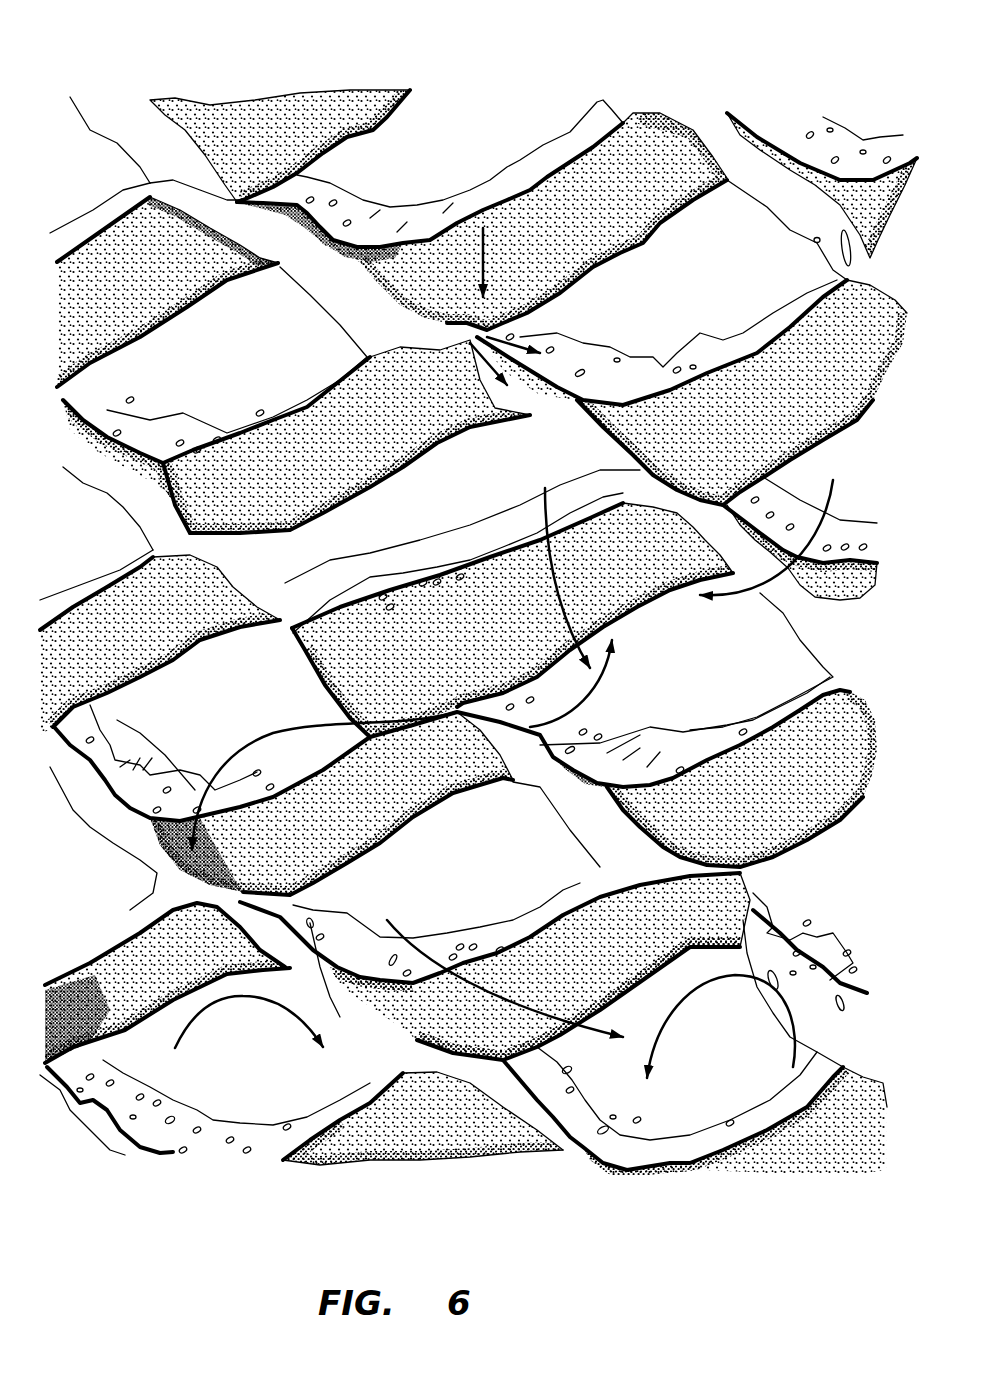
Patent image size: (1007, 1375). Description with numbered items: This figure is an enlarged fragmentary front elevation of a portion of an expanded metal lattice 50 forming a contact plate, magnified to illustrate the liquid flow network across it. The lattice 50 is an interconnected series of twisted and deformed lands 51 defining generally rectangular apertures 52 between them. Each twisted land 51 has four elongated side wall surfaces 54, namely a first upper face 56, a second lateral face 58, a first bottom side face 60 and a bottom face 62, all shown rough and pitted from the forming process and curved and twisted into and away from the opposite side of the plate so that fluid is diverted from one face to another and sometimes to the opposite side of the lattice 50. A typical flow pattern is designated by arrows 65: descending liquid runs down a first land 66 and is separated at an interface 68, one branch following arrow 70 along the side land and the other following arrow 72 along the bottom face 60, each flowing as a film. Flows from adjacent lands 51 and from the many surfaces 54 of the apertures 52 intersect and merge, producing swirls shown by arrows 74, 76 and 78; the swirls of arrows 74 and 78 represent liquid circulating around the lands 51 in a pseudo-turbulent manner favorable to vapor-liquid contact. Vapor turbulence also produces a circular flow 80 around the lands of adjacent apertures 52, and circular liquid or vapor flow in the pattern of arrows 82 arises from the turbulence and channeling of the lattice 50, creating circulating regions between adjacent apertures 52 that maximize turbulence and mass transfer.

The expanded metal lattice 50 is at (228, 112).
The twisted land 51 is at (123, 230).
The aperture 52 is at (743, 210).
The side wall surface 54 is at (655, 350).
The first upper face 56 is at (222, 280).
The second lateral face 58 is at (307, 293).
The first bottom side face 60 is at (137, 408).
The bottom face 62 is at (243, 420).
The arrows 65 is at (490, 240).
The first land 66 is at (577, 185).
The interface 68 is at (447, 318).
The arrow 70 is at (477, 425).
The arrow 72 is at (523, 337).
The arrow 74 is at (543, 518).
The arrow 76 is at (243, 770).
The arrow 78 is at (420, 953).
The circular flow 80 is at (290, 667).
The arrows 82 is at (248, 997).